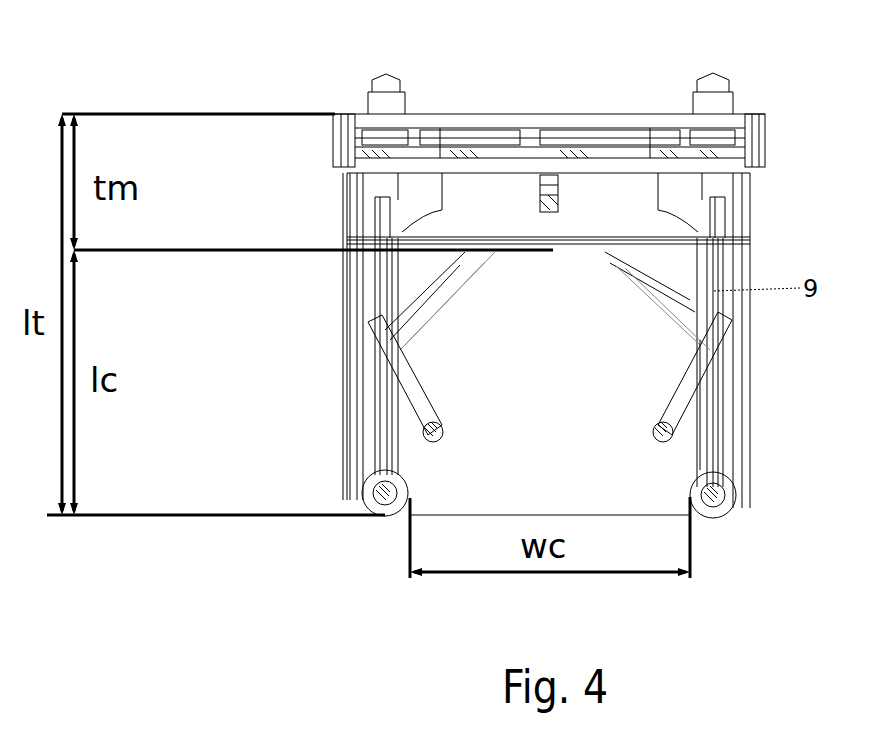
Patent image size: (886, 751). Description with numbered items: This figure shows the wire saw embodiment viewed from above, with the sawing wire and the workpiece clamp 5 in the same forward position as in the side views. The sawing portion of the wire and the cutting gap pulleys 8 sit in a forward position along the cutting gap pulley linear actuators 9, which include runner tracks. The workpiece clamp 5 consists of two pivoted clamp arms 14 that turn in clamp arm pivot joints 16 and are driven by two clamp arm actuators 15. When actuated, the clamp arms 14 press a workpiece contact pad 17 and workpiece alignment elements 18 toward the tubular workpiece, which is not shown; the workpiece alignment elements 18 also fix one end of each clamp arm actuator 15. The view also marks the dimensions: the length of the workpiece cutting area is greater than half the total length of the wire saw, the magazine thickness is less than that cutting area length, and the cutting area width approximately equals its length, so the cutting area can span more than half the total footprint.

The workpiece clamp 5 is at (415, 413).
The cutting gap pulleys 8 is at (722, 503).
The cutting gap pulley linear actuators 9 is at (347, 267).
The clamp arms 14 is at (680, 410).
The clamp arm actuators 15 is at (443, 270).
The clamp arm pivot joints 16 is at (693, 388).
The workpiece contact pad 17 is at (553, 250).
The workpiece alignment elements 18 is at (665, 307).